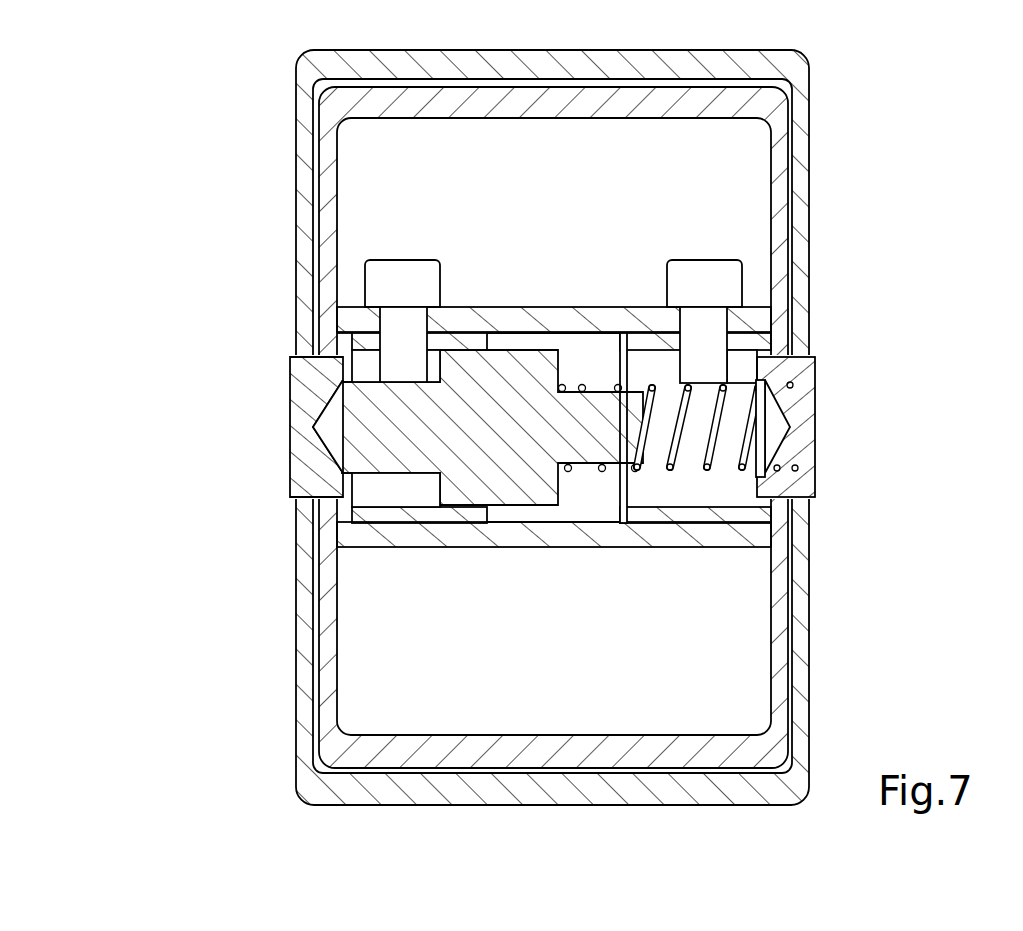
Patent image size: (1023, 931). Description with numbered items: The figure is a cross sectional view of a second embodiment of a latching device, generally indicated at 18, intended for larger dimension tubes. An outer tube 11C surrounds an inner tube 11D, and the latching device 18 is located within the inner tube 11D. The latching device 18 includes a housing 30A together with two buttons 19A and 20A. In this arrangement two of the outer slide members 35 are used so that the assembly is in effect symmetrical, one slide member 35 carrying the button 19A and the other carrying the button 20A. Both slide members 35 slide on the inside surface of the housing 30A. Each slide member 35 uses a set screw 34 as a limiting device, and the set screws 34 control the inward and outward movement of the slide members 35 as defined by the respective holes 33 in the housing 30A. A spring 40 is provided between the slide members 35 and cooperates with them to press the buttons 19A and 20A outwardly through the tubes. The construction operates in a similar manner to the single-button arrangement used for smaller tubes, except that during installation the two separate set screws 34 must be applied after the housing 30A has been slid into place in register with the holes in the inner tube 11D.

The outer tube 11C is at (806, 150).
The inner tube 11D is at (790, 200).
The latching device 18 is at (563, 412).
The button 19A is at (817, 455).
The button 20A is at (288, 432).
The housing 30A is at (527, 306).
The hole 33 is at (432, 345).
The set screw 34 is at (397, 258).
The outer slide member 35 is at (815, 359).
The spring 40 is at (602, 472).